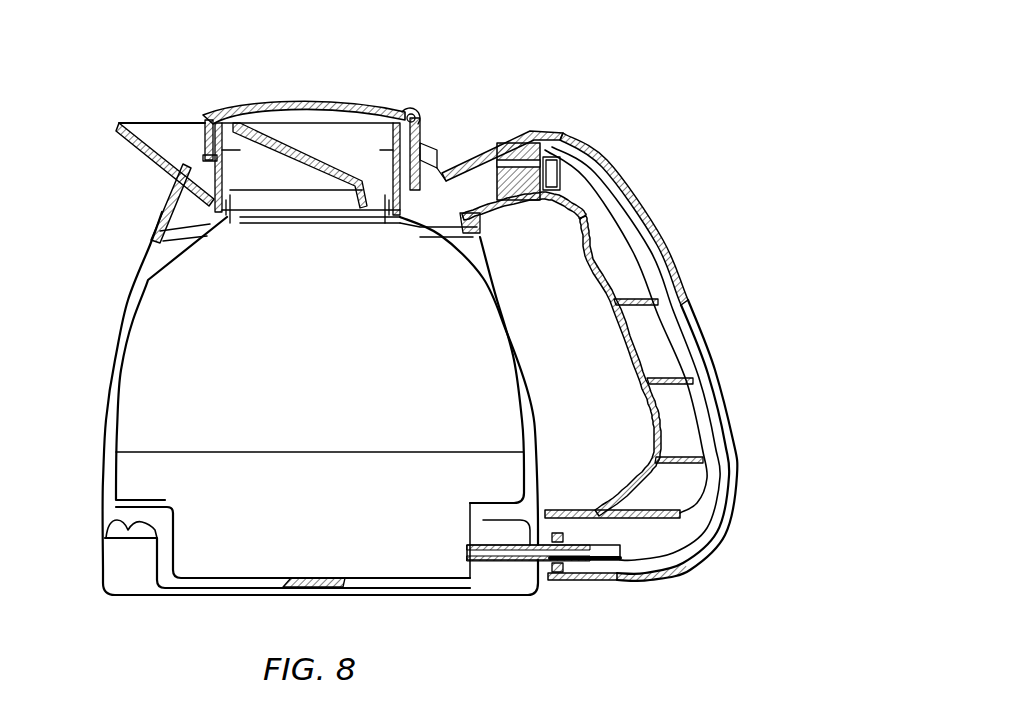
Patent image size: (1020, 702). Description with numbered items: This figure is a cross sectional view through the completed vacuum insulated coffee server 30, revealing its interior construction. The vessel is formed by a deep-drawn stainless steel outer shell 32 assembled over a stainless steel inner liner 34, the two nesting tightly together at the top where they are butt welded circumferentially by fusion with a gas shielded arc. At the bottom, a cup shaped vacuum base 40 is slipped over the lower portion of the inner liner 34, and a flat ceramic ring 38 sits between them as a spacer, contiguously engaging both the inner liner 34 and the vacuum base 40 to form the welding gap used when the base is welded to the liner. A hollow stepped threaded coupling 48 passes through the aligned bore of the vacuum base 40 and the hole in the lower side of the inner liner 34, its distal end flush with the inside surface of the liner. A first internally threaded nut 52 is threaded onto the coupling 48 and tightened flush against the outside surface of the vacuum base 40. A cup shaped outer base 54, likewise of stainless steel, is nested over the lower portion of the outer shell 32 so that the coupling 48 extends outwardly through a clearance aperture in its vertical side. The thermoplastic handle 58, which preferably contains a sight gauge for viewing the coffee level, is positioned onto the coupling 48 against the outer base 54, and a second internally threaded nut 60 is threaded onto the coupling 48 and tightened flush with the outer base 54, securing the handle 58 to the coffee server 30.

The coffee server 30 is at (470, 125).
The coffee server outer shell 32 is at (133, 273).
The coffee server inner liner 34 is at (117, 373).
The flat ceramic ring 38 is at (290, 583).
The vacuum base 40 is at (155, 557).
The hollow stepped threaded coupling 48 is at (612, 565).
The first internally threaded nut 52 is at (487, 568).
The outer base 54 is at (137, 597).
The handle 58 is at (682, 278).
The second internally threaded nut 60 is at (560, 570).